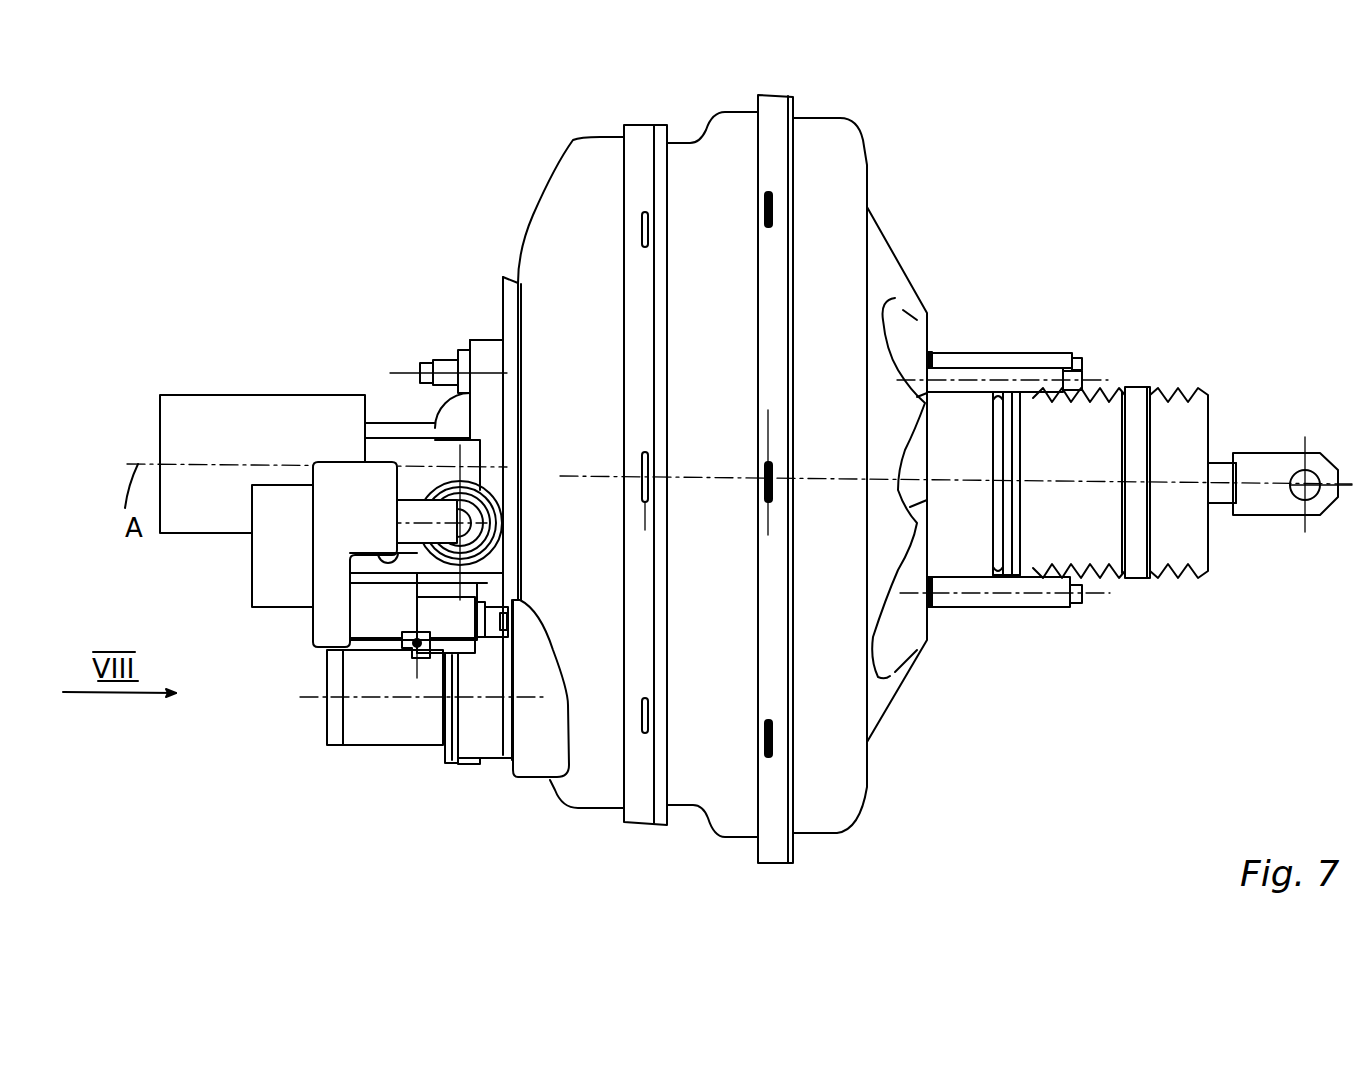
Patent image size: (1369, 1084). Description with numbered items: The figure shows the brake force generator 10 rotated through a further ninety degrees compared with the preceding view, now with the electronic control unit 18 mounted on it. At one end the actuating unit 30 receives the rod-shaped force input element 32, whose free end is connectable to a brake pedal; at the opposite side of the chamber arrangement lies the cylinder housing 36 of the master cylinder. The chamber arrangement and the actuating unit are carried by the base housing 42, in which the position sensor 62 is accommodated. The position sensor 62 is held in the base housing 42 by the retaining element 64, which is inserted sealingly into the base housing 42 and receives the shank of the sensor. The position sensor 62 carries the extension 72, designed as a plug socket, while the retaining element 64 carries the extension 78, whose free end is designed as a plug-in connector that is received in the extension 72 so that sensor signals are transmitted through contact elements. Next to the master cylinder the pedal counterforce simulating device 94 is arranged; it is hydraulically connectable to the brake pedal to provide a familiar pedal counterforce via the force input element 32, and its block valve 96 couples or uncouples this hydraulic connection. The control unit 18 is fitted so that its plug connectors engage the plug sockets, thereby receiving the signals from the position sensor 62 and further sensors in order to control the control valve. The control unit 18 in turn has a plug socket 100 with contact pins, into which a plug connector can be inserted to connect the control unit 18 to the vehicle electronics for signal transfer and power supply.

The brake force generator 10 is at (1010, 213).
The electronic control unit 18 is at (348, 483).
The actuating unit 30 is at (1112, 390).
The force input element 32 is at (1270, 454).
The cylinder housing 36 is at (197, 410).
The base housing 42 is at (855, 146).
The position sensor 62 is at (353, 728).
The retaining element 64 is at (492, 745).
The extension 72 is at (363, 617).
The extension 78 is at (440, 752).
The pedal counterforce simulating device 94 is at (485, 482).
The block valve 96 is at (437, 480).
The plug socket 100 is at (272, 592).